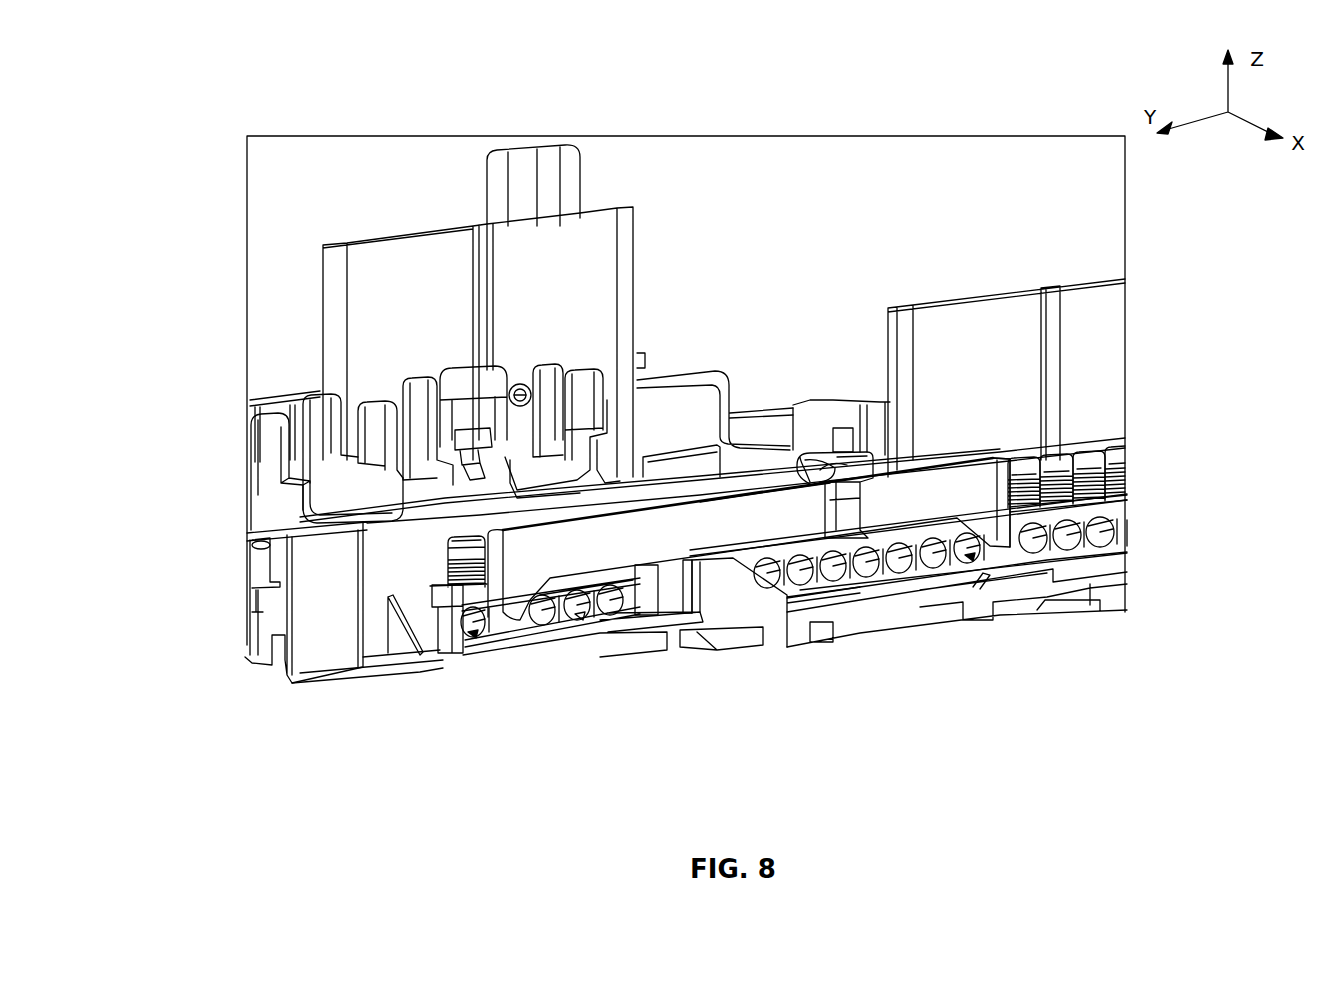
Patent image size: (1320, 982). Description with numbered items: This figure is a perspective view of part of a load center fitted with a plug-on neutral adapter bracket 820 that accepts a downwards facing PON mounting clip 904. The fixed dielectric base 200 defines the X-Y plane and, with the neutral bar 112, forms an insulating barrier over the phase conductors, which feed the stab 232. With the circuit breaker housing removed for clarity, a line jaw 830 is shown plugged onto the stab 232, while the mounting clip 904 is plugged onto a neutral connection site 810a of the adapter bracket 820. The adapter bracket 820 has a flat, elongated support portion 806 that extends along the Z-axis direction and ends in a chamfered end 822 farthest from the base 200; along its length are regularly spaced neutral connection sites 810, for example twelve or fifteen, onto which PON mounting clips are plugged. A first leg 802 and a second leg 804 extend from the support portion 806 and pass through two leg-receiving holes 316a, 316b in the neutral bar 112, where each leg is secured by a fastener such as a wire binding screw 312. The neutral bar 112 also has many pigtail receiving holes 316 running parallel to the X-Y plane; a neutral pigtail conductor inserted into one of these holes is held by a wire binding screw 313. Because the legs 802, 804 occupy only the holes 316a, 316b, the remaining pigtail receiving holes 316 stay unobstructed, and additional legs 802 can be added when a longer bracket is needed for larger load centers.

The neutral bar 112 is at (450, 630).
The base 200 is at (397, 687).
The stab 232 is at (490, 383).
The wire binding screw 312 is at (513, 552).
The wire binding screw 313 is at (1087, 447).
The pigtail receiving holes 316 is at (587, 620).
The leg-receiving hole 316a is at (467, 628).
The leg-receiving hole 316b is at (965, 555).
The first leg 802 is at (420, 653).
The second leg 804 is at (1000, 543).
The support portion 806 is at (507, 627).
The neutral connection sites 810 is at (900, 504).
The neutral connection site 810a is at (828, 479).
The adapter bracket 820 is at (440, 585).
The chamfered end 822 is at (990, 457).
The line jaw 830 is at (452, 385).
The PON mounting clip 904 is at (857, 465).